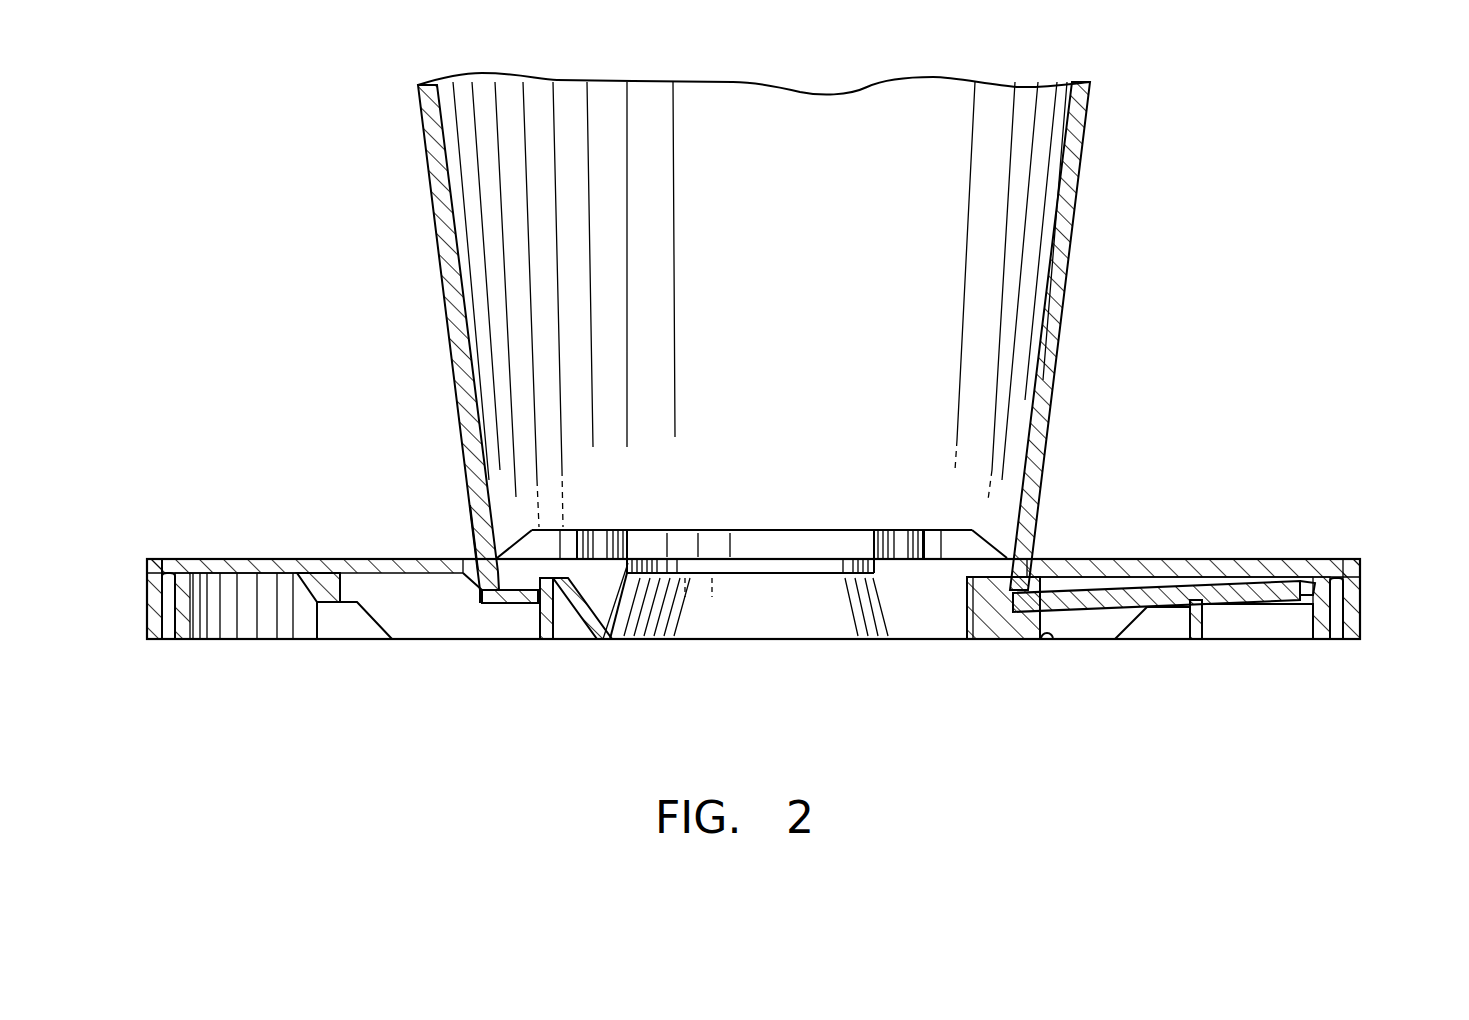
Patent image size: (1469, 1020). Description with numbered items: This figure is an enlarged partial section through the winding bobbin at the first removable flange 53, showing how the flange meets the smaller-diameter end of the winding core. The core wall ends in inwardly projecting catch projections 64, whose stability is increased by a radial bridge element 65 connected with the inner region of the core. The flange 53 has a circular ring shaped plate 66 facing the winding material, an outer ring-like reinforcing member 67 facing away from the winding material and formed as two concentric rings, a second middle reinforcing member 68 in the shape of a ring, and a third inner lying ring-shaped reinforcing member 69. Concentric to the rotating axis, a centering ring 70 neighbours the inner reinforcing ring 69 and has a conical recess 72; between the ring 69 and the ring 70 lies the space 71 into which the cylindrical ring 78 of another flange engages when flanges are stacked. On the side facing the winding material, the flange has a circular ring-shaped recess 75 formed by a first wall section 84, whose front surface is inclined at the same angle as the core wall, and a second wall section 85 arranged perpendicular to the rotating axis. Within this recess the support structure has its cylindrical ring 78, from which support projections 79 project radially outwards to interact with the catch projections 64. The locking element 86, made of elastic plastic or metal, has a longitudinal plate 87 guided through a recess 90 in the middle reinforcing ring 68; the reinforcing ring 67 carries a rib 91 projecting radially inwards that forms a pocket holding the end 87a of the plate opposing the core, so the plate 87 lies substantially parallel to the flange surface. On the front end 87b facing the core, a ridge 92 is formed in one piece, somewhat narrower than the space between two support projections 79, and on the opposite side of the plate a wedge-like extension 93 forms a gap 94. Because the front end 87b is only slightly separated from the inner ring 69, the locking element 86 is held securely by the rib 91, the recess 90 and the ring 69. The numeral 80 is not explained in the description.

The first removable flange 53 is at (1395, 604).
The catch projections 64 is at (505, 582).
The radial bridge element 65 is at (494, 495).
The circular ring shaped plate 66 is at (255, 558).
The outer ring-like reinforcing member 67 is at (150, 642).
The second middle reinforcing member 68 is at (303, 641).
The third inner lying ring-shaped reinforcing member 69 is at (542, 632).
The centering ring 70 is at (612, 641).
The space 71 is at (578, 641).
The conical recess 72 is at (628, 598).
The circular ring-shaped recess 75 is at (472, 533).
The cylindrical ring 78 is at (567, 530).
The support projections 79 is at (943, 533).
The groove 80 is at (518, 520).
The first wall section 84 is at (473, 582).
The second wall section 85 is at (485, 603).
The locking element 86 is at (1092, 592).
The longitudinal plate 87 is at (1238, 578).
The end of the plate 87a is at (1302, 578).
The front end of the plate 87b is at (1070, 610).
The recess 90 is at (1190, 567).
The rib 91 is at (1297, 604).
The ridge 92 is at (1000, 540).
The wedge-like extension 93 is at (995, 640).
The gap 94 is at (1046, 640).